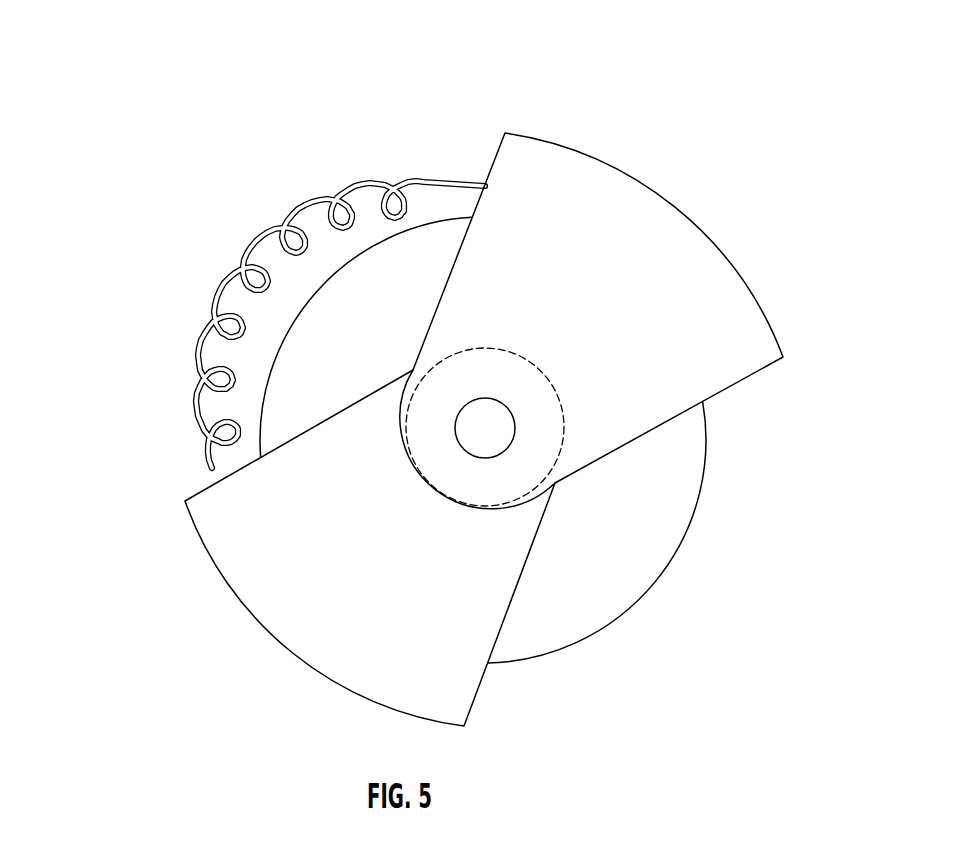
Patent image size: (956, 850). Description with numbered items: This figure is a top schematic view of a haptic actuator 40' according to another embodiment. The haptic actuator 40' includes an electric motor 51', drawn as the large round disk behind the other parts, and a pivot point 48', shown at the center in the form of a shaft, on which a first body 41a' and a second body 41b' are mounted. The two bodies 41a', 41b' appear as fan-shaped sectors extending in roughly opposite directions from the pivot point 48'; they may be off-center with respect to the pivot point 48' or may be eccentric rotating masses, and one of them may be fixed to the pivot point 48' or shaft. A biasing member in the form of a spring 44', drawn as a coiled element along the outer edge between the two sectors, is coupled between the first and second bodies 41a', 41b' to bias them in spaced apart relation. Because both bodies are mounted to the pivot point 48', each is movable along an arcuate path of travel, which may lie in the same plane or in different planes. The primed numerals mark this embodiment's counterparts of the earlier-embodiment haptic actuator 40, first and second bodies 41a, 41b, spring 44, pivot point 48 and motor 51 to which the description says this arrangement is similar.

The haptic actuator 40' is at (81, 188).
The spring 44' is at (340, 278).
The first body 41a' is at (598, 248).
The second body 41b' is at (292, 548).
The electric motor 51' is at (548, 440).
The pivot point 48' is at (544, 546).
The rotor assembly 40 is at (81, 188).
The coil spring 44 is at (340, 278).
The first blade 41a is at (598, 248).
The second blade 41b is at (292, 548).
The disk 51 is at (548, 440).
The shaft 48 is at (544, 546).